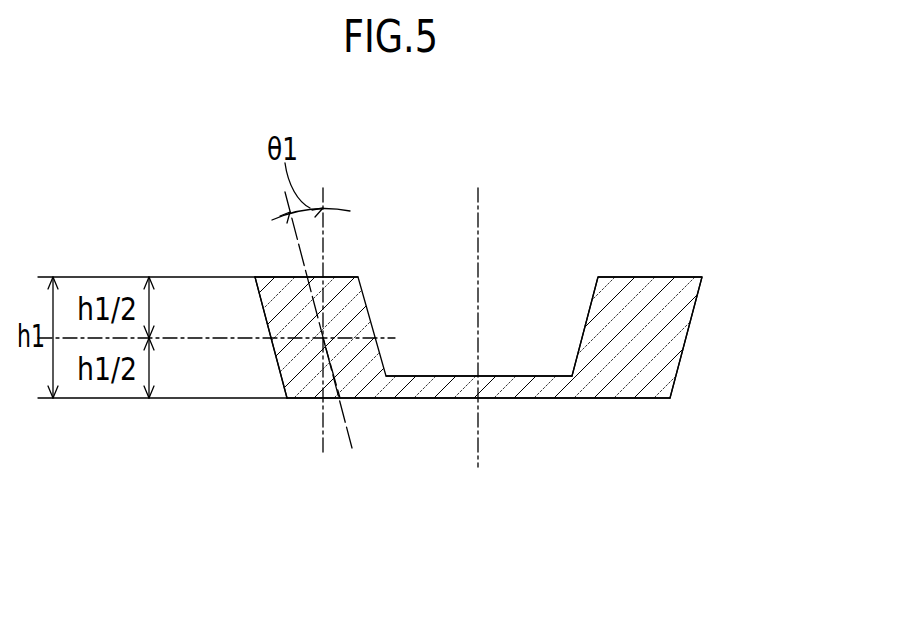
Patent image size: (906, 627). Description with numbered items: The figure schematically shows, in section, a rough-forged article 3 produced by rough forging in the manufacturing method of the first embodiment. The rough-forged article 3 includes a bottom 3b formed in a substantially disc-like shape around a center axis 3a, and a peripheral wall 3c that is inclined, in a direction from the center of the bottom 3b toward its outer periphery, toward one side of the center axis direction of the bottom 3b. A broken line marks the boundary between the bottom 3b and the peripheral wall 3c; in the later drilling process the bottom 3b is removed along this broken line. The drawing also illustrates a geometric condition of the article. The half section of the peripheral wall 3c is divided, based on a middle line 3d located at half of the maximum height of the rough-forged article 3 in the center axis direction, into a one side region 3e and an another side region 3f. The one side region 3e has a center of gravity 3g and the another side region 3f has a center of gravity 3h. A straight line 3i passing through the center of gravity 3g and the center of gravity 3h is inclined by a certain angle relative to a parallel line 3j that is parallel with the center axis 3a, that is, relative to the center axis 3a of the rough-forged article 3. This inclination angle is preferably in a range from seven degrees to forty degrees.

The rough-forged article 3 is at (724, 252).
The center axis 3a is at (478, 222).
The bottom 3b is at (527, 388).
The peripheral wall 3c is at (670, 318).
The middle line 3d is at (390, 337).
The one side region 3e is at (281, 290).
The another side region 3f is at (293, 364).
The center of gravity of the one side region 3g is at (315, 307).
The center of gravity of the another side region 3h is at (332, 368).
The straight line 3i is at (287, 207).
The parallel line 3j is at (325, 198).